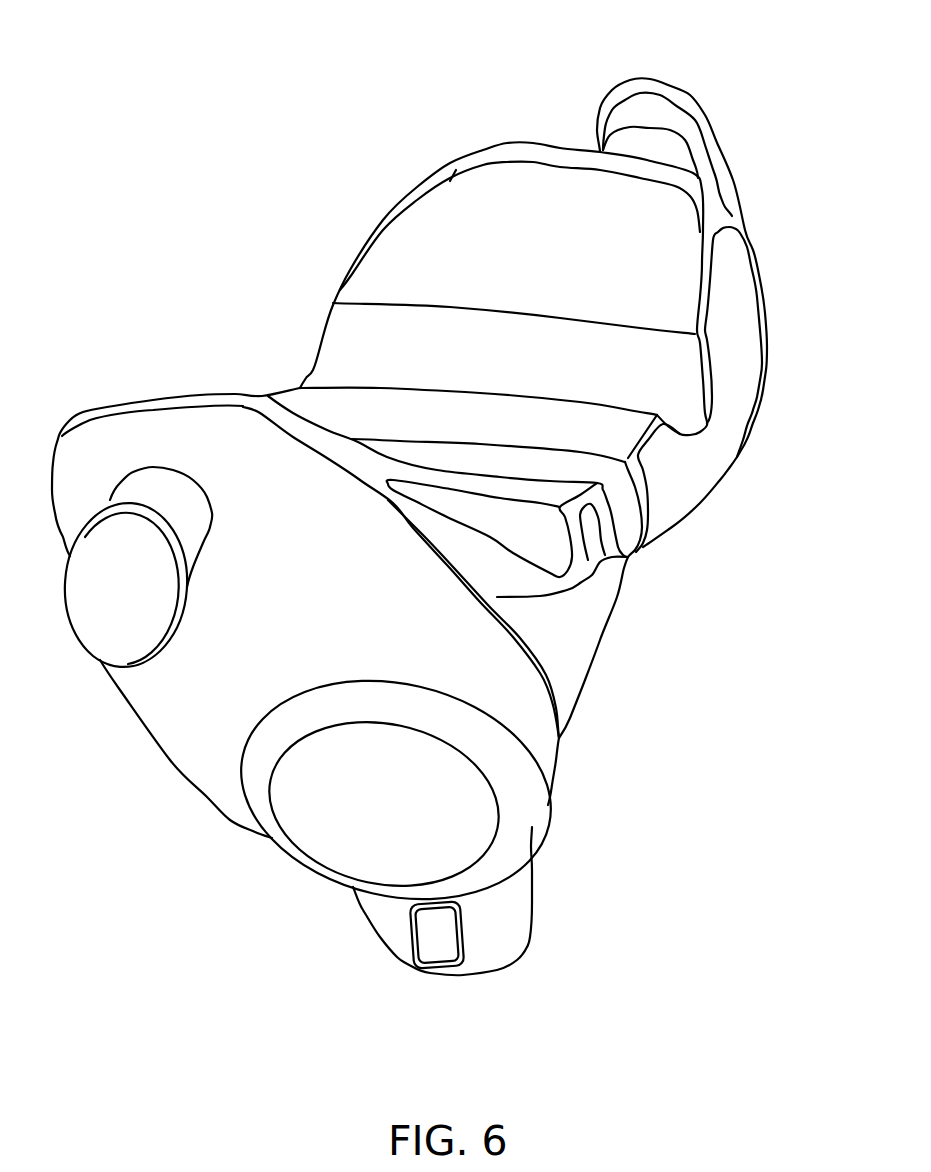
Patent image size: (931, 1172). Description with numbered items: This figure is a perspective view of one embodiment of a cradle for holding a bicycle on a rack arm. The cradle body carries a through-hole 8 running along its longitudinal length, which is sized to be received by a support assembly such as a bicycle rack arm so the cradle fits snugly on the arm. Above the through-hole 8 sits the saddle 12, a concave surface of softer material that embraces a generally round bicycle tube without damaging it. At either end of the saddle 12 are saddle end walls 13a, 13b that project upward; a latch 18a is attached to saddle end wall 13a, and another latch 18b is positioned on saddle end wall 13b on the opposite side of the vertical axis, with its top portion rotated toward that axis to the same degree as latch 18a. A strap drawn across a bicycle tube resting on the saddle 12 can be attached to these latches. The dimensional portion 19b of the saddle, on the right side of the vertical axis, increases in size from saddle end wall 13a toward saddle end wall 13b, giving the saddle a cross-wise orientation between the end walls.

The through-hole 8 is at (478, 828).
The saddle 12 is at (373, 395).
The saddle end wall 13a is at (152, 401).
The saddle end wall 13b is at (715, 213).
The latch 18a is at (104, 644).
The latch 18b is at (668, 124).
The dimensional portion 19b is at (707, 424).